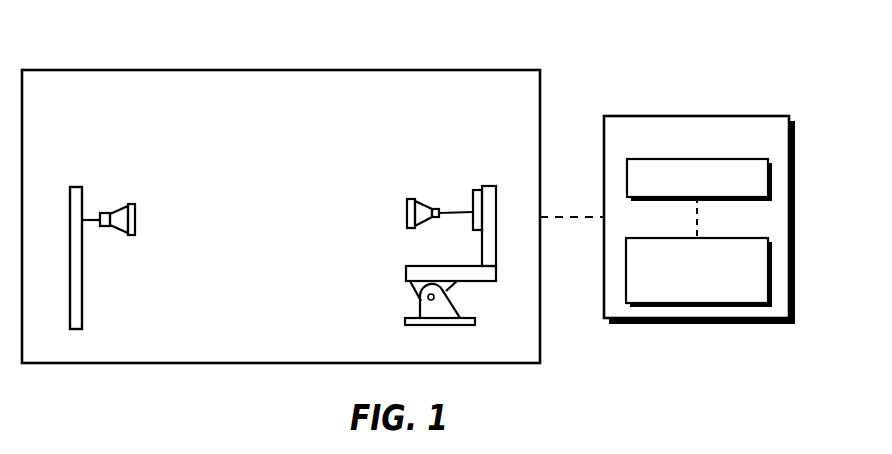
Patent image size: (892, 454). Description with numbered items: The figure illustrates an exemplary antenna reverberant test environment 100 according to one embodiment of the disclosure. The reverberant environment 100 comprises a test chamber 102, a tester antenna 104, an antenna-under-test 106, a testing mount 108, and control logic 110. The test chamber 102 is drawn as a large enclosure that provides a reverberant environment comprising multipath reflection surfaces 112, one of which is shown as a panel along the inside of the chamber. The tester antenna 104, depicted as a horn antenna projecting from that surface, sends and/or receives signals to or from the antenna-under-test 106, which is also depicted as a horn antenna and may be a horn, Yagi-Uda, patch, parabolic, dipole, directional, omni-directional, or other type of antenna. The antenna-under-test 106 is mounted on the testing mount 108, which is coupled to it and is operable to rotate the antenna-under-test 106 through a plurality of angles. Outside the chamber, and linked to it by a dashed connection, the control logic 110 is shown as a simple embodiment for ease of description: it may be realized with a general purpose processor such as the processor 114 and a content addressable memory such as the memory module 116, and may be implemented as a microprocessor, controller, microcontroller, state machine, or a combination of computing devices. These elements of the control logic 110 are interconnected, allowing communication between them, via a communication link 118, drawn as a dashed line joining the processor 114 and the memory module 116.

The antenna reverberant test environment 100 is at (677, 29).
The test chamber 102 is at (280, 70).
The tester antenna 104 is at (135, 215).
The antenna-under-test 106 is at (406, 207).
The testing mount 108 is at (412, 295).
The control logic 110 is at (757, 116).
The multipath reflection surfaces 112 is at (22, 135).
The processor 114 is at (773, 173).
The memory module 116 is at (772, 290).
The communication link 118 is at (700, 217).